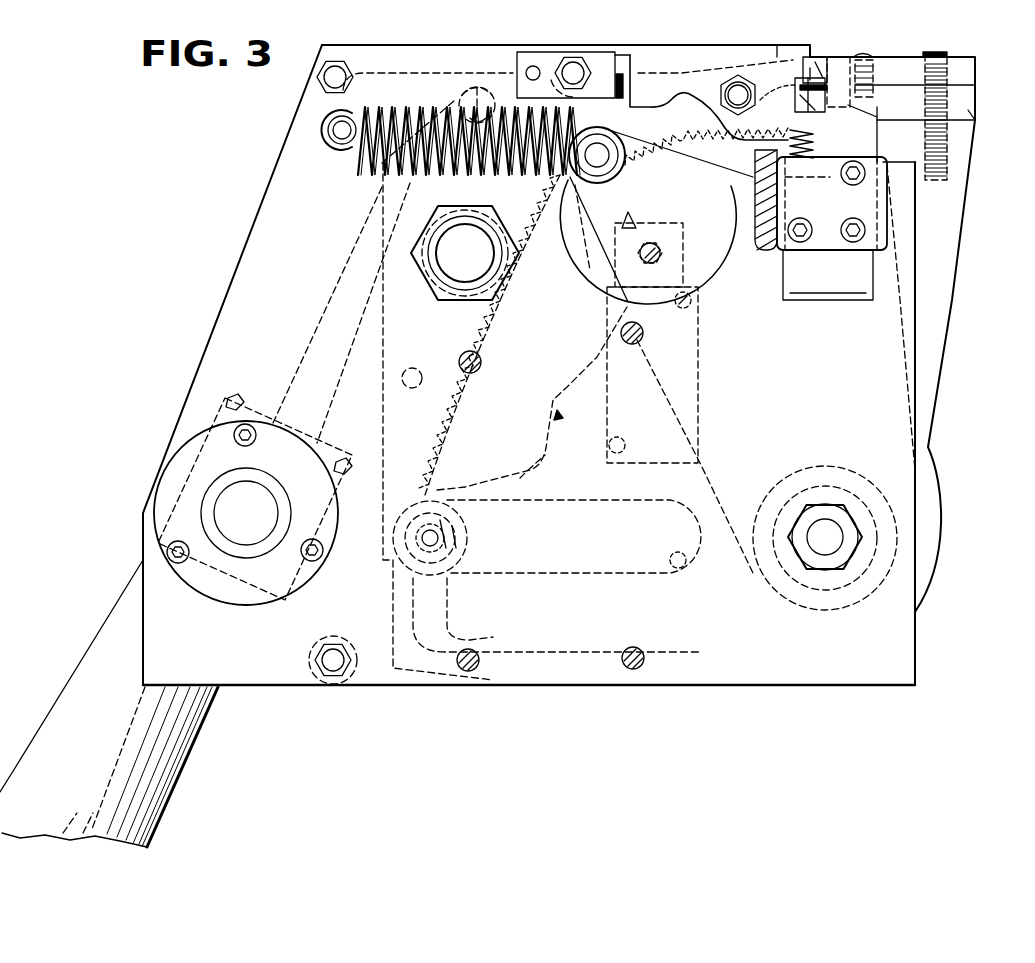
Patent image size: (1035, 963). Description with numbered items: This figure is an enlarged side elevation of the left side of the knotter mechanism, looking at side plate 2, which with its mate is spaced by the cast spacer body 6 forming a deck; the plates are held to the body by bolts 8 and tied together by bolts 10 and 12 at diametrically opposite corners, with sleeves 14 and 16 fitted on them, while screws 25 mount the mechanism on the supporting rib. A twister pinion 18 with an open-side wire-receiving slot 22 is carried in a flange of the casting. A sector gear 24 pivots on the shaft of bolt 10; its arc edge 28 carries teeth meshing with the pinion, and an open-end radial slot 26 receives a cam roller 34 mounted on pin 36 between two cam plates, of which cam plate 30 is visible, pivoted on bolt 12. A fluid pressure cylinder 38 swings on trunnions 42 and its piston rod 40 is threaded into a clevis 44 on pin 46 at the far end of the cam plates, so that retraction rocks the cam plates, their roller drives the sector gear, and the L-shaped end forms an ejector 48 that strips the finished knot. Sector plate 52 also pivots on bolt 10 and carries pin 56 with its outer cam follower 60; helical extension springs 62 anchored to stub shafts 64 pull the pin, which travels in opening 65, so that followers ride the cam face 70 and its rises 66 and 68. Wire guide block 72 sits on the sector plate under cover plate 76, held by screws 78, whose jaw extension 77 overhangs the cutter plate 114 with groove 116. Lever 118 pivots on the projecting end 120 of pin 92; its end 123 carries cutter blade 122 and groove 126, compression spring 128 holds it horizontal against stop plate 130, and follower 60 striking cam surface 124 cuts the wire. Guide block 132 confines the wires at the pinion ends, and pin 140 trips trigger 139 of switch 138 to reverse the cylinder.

The side plate 2 is at (227, 294).
The cast spacer body 6 is at (447, 63).
The bolts 8 is at (328, 70).
The bolt 10 is at (810, 548).
The bolt 12 is at (475, 263).
The sleeves 14 is at (815, 492).
The sleeves 16 is at (496, 222).
The twister pinion 18 is at (845, 57).
The wire-receiving slot 22 is at (915, 97).
The sector gear 24 is at (463, 327).
The screws 25 is at (481, 364).
The radial slot 26 is at (676, 570).
The arc edge 28 is at (455, 348).
The cam plate 30 is at (598, 400).
The cam roller 34 is at (460, 548).
The pin 36 is at (438, 492).
The fluid pressure cylinder 38 is at (192, 722).
The piston rod 40 is at (345, 304).
The trunnions 42 is at (236, 535).
The clevis 44 is at (470, 185).
The pin 46 is at (485, 88).
The ejector 48 is at (510, 643).
The sector plate 52 is at (950, 300).
The pin 56 is at (600, 140).
The cam follower 60 is at (623, 143).
The helical extension springs 62 is at (398, 112).
The stub shafts 64 is at (333, 148).
The opening 65 is at (716, 258).
The rise 66 is at (645, 190).
The rise 68 is at (532, 470).
The cam face 70 is at (560, 417).
The wire guide block 72 is at (968, 114).
The cover plate 76 is at (950, 57).
The jaw extension 77 is at (773, 80).
The screws 78 is at (870, 55).
The pin 92 is at (742, 66).
The cutter plate 114 is at (872, 140).
The groove 116 is at (925, 119).
The lever 118 is at (718, 55).
The projecting end of pin 120 is at (732, 90).
The cutter blade 122 is at (812, 56).
The lever end 123 is at (826, 62).
The cam surface 124 is at (711, 97).
The groove 126 is at (798, 103).
The helical compression spring 128 is at (806, 163).
The stop plate 130 is at (623, 65).
The guide block 132 is at (790, 45).
The switch 138 is at (699, 353).
The trigger 139 is at (588, 270).
The pin 140 is at (410, 388).